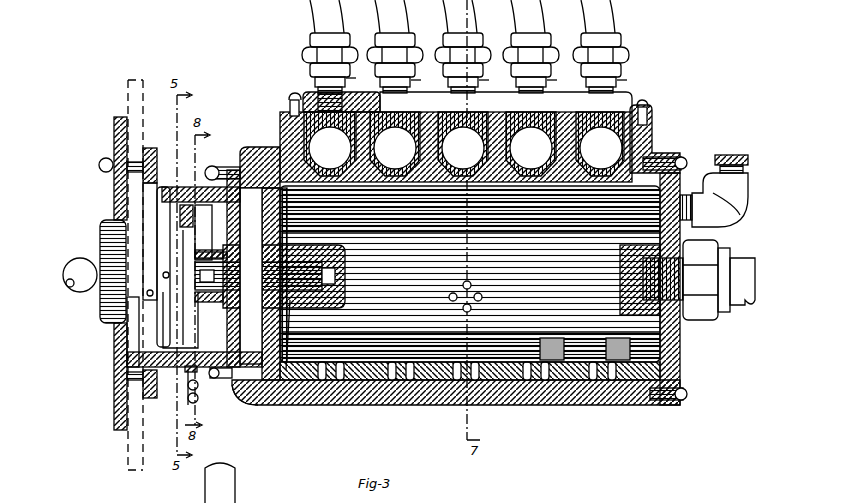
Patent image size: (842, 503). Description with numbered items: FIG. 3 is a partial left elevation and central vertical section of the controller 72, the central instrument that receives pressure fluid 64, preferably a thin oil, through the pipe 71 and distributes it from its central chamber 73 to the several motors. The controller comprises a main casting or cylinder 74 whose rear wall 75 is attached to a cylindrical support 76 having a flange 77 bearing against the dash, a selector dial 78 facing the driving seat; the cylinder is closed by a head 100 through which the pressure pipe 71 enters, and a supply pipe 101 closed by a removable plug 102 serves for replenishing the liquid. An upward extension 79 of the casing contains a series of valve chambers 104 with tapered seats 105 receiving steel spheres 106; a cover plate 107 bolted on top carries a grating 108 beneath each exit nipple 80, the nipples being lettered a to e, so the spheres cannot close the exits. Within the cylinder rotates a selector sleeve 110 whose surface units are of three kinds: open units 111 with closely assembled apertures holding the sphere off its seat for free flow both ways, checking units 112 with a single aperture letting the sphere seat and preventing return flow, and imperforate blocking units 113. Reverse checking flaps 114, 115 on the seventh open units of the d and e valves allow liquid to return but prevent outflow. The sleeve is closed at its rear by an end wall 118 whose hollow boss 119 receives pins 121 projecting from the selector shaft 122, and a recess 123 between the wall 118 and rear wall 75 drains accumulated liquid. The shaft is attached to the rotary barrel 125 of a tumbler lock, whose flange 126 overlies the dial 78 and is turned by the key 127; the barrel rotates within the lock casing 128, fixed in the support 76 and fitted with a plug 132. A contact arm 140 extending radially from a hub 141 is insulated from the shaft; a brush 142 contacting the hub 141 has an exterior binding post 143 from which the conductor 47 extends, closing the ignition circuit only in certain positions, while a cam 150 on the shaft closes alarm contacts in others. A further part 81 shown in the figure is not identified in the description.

The head 100 is at (680, 350).
The main casting or cylinder 74 is at (381, 398).
The selector sleeve 110 is at (470, 274).
The open sleeve unit 111 is at (343, 188).
The checking sleeve unit 112 is at (525, 188).
The blocking sleeve unit 113 is at (604, 188).
The central chamber 73 is at (447, 345).
The pressure fluid 64 is at (510, 348).
The reverse checking flap 114 is at (556, 360).
The reverse checking flap 115 is at (624, 360).
The selector shaft 122 is at (297, 362).
The end wall of sleeve 118 is at (286, 372).
The recess 123 is at (256, 398).
The hollow boss 119 is at (291, 276).
The pins 121 is at (326, 262).
The rear wall 75 is at (235, 250).
The cylindrical support 76 is at (192, 186).
The contact arm 140 is at (247, 160).
The seat 105 is at (284, 118).
The cross bar or grating 108 is at (290, 102).
The valve chambers 104 is at (475, 106).
The valve spheres 106 is at (465, 148).
The cover plate 107 is at (654, 110).
The upward extension 79 is at (652, 140).
The short pipes or nipples 80 is at (314, 78).
The controller 72 is at (258, 68).
The supply pipe 101 is at (714, 200).
The removable plug 102 is at (733, 153).
The pressure pipe 71 is at (738, 305).
The selector dial 78 is at (115, 118).
The flange 77 is at (150, 150).
The rotary barrel of tumbler lock 125 is at (170, 262).
The enlarged disk or flange 126 is at (170, 285).
The key 127 is at (64, 283).
The plug 132 is at (102, 308).
The lock casing 128 is at (118, 328).
The contact closing arm or cam 150 is at (183, 300).
The hub 141 is at (192, 262).
The brush 142 is at (212, 315).
The exterior binding post 143 is at (199, 392).
The conductor 47 is at (193, 405).
The tube 81 is at (240, 500).